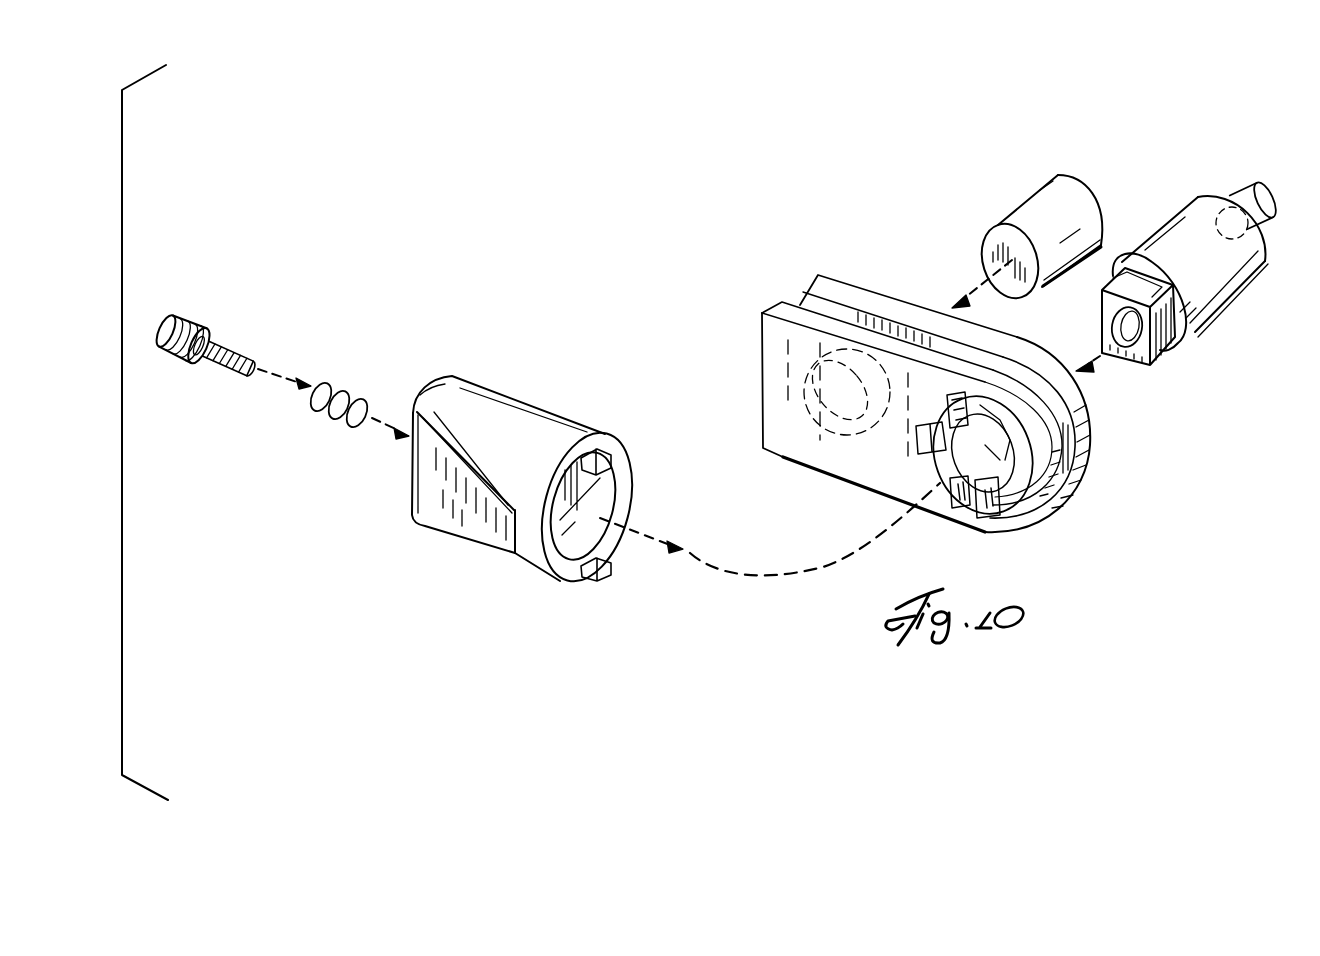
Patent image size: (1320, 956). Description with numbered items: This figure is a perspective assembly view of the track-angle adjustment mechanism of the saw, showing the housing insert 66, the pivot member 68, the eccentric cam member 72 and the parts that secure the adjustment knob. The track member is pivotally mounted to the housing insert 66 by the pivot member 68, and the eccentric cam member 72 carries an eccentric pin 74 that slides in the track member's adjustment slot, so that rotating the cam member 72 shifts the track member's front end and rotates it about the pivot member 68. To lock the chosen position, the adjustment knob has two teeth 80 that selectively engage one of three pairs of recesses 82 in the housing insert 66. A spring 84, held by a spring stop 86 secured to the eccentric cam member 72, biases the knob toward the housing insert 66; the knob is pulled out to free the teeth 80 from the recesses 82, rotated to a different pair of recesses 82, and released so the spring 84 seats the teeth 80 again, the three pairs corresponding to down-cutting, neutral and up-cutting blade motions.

The housing insert 66 is at (770, 328).
The pivot member 68 is at (1073, 192).
The eccentric cam member 72 is at (1208, 316).
The eccentric pin 74 is at (1264, 188).
The teeth 80 is at (611, 459).
The recesses 82 is at (917, 445).
The spring 84 is at (356, 391).
The spring stop 86 is at (207, 333).